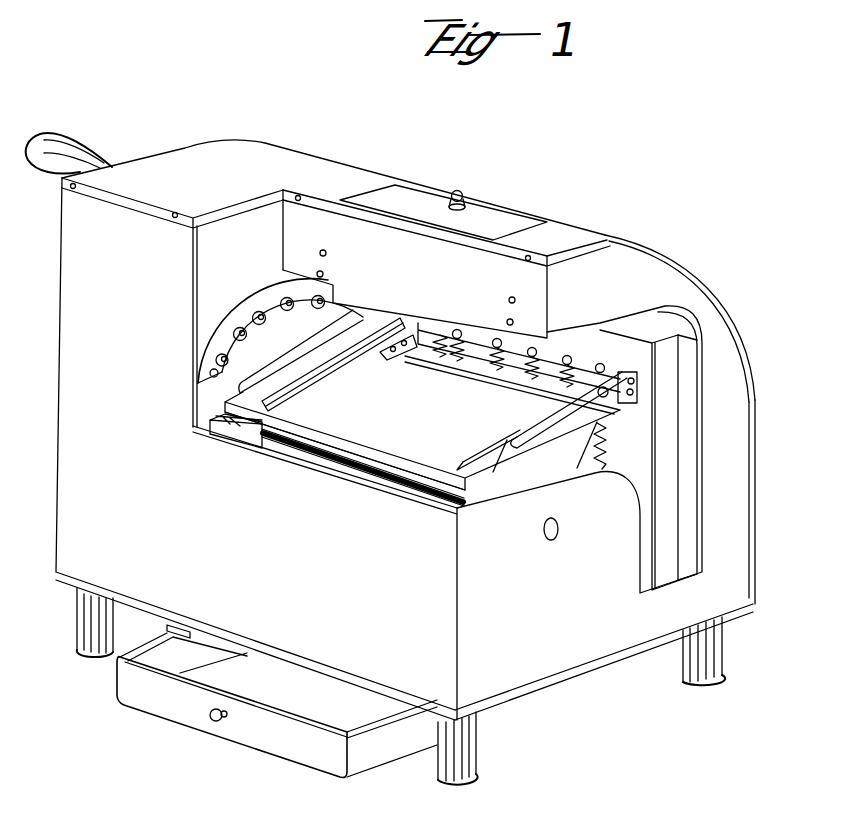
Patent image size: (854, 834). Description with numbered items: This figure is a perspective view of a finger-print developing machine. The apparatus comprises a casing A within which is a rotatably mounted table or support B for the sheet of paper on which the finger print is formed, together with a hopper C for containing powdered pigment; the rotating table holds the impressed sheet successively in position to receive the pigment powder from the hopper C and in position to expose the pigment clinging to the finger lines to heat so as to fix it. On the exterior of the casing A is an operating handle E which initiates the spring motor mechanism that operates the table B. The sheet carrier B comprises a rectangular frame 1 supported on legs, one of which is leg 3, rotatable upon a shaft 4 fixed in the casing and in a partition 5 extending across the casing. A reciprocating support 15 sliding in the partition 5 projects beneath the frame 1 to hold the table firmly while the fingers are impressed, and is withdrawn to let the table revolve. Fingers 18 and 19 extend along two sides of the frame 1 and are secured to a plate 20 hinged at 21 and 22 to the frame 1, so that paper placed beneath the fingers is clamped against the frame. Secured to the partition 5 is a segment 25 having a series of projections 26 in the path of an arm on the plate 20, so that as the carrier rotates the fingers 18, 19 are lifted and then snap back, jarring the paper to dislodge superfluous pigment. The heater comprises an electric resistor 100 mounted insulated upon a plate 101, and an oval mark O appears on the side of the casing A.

The rectangular frame 1 is at (341, 433).
The leg 3 is at (583, 452).
The shaft 4 is at (385, 478).
The partition 5 is at (238, 308).
The reciprocating support 15 is at (209, 417).
The finger 18 is at (480, 457).
The finger 19 is at (300, 386).
The plate 20 is at (519, 357).
The hinge 21 is at (418, 334).
The hinge 22 is at (623, 404).
The segment 25 is at (226, 325).
The projections 26 is at (290, 332).
The electric resistor 100 is at (617, 448).
The plate 101 is at (676, 457).
The casing A is at (405, 430).
The table or support B is at (422, 423).
The hopper C is at (446, 261).
The operating handle E is at (56, 141).
The opening O is at (551, 529).